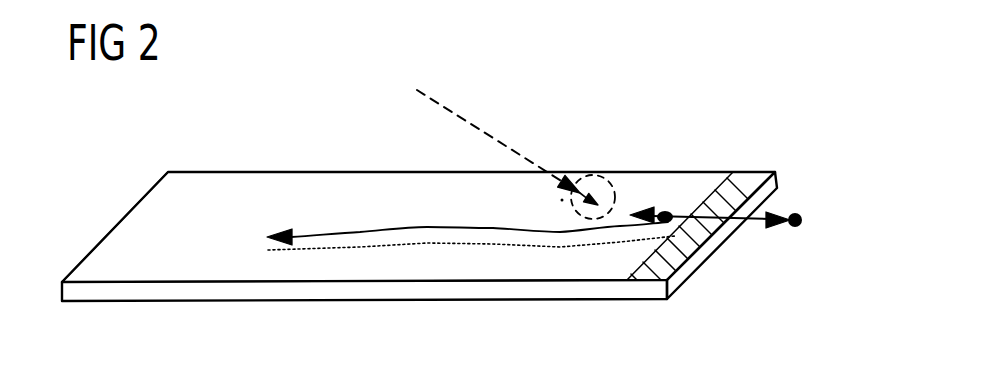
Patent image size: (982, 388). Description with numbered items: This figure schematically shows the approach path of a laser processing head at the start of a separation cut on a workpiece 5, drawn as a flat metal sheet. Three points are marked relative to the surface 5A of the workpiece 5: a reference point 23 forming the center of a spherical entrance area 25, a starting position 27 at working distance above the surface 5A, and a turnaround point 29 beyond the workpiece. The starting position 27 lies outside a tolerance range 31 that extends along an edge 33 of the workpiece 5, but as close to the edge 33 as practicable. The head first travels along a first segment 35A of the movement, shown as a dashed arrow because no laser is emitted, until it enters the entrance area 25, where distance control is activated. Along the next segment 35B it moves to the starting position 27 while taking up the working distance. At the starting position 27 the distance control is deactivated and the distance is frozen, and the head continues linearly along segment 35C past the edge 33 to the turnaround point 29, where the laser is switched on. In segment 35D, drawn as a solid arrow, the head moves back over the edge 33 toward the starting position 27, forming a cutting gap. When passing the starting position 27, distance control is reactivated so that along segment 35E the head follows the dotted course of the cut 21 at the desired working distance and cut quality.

The workpiece 5 is at (157, 303).
The surface of the workpiece 5A is at (197, 185).
The course of the cut 21 is at (330, 254).
The reference point 23 is at (583, 196).
The entrance area 25 is at (560, 200).
The starting position 27 is at (666, 212).
The turnaround point 29 is at (802, 222).
The tolerance range 31 is at (752, 171).
The edge of the workpiece 33 is at (700, 262).
The first segment of the movement 35A is at (447, 110).
The second segment of the movement 35B is at (619, 208).
The third segment of the movement 35C is at (758, 230).
The fourth segment of the movement 35D is at (783, 228).
The fifth segment of the movement 35E is at (355, 233).